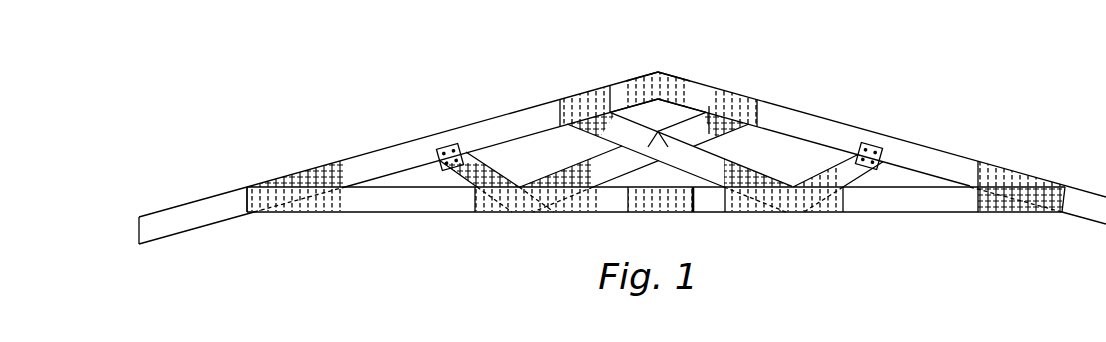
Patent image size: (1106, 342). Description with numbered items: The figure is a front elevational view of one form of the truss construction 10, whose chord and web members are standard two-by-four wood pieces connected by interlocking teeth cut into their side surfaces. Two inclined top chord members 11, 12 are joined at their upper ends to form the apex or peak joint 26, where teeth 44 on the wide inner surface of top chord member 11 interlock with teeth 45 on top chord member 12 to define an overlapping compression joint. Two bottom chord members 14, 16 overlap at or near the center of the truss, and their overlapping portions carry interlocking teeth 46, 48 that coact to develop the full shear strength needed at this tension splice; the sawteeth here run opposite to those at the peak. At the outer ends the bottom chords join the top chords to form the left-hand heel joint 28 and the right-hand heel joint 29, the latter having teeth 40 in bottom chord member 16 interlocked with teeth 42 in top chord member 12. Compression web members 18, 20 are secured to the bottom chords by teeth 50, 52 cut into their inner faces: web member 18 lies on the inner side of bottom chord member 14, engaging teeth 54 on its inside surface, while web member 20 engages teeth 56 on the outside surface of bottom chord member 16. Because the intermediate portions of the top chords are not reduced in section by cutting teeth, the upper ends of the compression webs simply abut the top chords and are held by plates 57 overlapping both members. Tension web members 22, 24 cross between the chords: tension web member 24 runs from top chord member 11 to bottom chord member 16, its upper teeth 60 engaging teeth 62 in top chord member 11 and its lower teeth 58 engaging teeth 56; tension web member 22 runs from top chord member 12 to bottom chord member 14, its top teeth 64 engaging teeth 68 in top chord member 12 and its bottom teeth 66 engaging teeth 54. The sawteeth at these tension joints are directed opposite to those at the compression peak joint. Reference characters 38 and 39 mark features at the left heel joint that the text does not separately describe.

The truss construction 10 is at (958, 99).
The top chord member 11 is at (503, 120).
The top chord member 12 is at (843, 127).
The bottom chord member 14 is at (425, 208).
The bottom chord member 16 is at (928, 209).
The compression web member 18 is at (458, 172).
The compression web member 20 is at (862, 178).
The tension web member 22 is at (616, 172).
The tension web member 24 is at (709, 172).
The peak joint 26 is at (659, 69).
The heel joint 28 is at (282, 216).
The heel joint 29 is at (1029, 216).
The left heel connector plate (top chord) 38 is at (279, 177).
The left heel connector plate (bottom chord) 39 is at (299, 213).
The teeth 40 is at (996, 210).
The teeth 42 is at (1038, 180).
The teeth 44 is at (636, 99).
The teeth 45 is at (641, 79).
The interlocking teeth 46 is at (670, 179).
The interlocking teeth 48 is at (661, 209).
The interlocking teeth 50 is at (498, 176).
The interlocking teeth 52 is at (830, 166).
The teeth 54 is at (519, 212).
The teeth 56 is at (750, 213).
The plates 57 is at (451, 146).
The lower teeth 58 is at (763, 180).
The upper teeth 60 is at (590, 131).
The teeth 62 is at (581, 97).
The top teeth 64 is at (738, 128).
The bottom teeth 66 is at (565, 171).
The teeth 68 is at (736, 101).